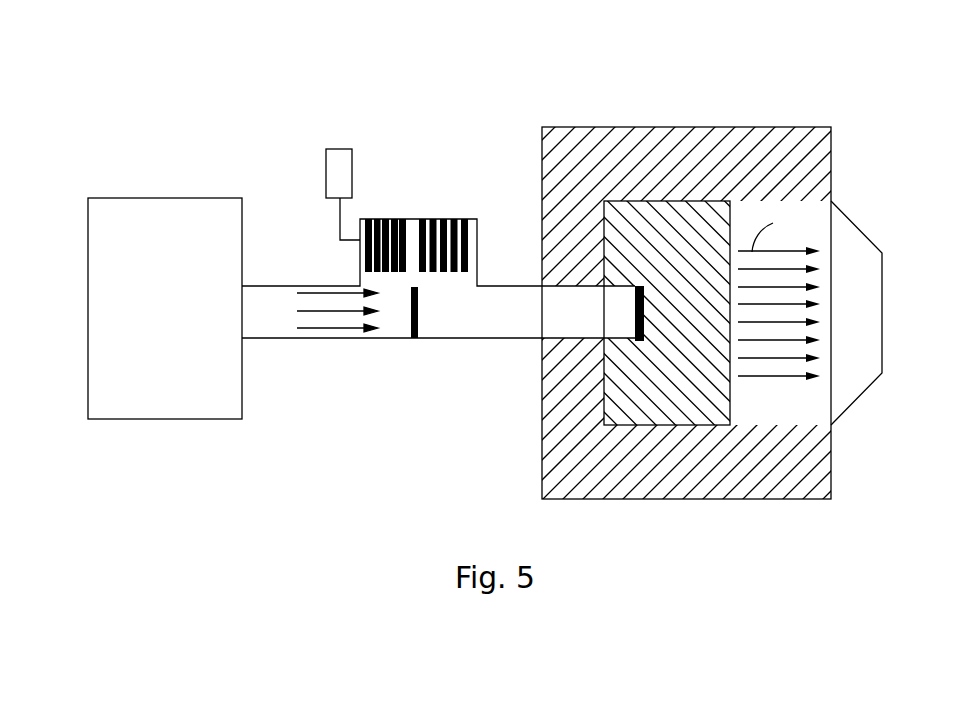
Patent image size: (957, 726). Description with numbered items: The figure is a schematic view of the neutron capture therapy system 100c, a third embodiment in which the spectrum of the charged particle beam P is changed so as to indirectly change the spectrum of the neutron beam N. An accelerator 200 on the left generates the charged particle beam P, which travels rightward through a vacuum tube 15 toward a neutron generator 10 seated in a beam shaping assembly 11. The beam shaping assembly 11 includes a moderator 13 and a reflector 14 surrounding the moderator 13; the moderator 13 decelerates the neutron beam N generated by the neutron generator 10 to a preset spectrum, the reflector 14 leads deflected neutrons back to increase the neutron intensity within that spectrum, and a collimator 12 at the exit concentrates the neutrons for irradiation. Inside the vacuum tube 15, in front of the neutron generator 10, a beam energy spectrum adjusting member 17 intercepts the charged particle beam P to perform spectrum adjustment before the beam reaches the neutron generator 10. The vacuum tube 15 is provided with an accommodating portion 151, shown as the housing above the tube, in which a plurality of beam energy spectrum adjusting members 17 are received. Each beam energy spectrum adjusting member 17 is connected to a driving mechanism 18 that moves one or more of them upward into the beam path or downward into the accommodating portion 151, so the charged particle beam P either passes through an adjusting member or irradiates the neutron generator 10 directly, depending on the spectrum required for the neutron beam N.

The neutron capture therapy system 100c is at (189, 44).
The accelerator 200 is at (112, 379).
The vacuum tube 15 is at (358, 338).
The accommodating portion 151 is at (405, 219).
The driving mechanism 18 is at (327, 150).
The beam energy spectrum adjusting member 17 is at (417, 338).
The beam shaping assembly 11 is at (697, 102).
The reflector 14 is at (555, 146).
The moderator 13 is at (630, 404).
The neutron generator 10 is at (635, 312).
The collimator 12 is at (853, 372).